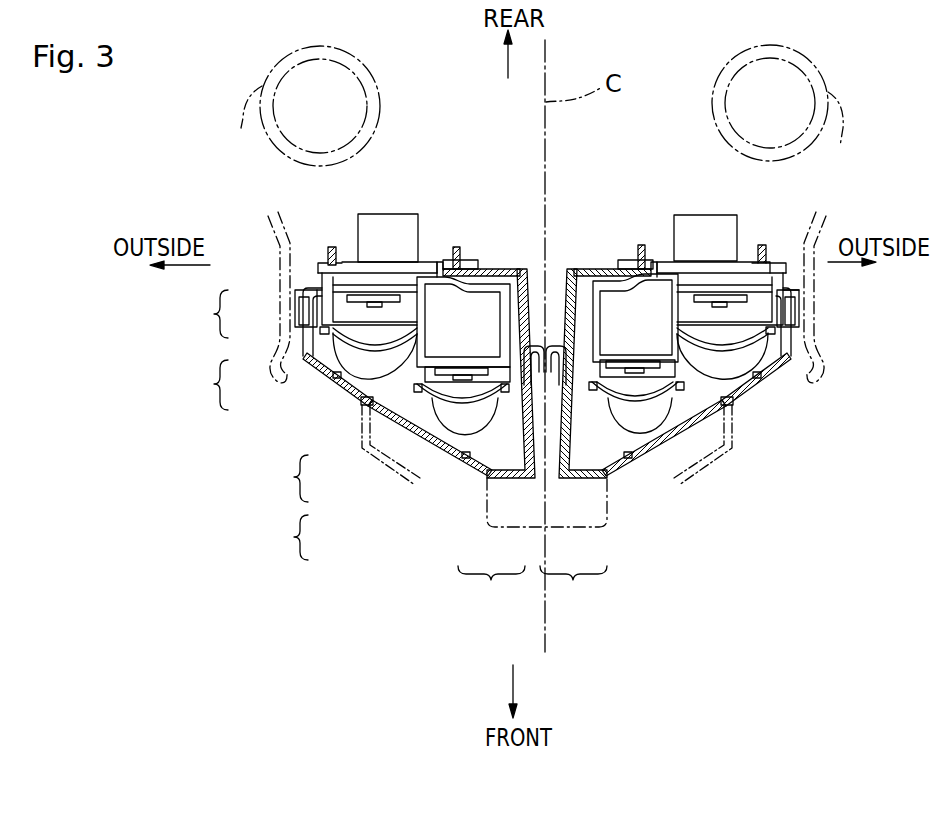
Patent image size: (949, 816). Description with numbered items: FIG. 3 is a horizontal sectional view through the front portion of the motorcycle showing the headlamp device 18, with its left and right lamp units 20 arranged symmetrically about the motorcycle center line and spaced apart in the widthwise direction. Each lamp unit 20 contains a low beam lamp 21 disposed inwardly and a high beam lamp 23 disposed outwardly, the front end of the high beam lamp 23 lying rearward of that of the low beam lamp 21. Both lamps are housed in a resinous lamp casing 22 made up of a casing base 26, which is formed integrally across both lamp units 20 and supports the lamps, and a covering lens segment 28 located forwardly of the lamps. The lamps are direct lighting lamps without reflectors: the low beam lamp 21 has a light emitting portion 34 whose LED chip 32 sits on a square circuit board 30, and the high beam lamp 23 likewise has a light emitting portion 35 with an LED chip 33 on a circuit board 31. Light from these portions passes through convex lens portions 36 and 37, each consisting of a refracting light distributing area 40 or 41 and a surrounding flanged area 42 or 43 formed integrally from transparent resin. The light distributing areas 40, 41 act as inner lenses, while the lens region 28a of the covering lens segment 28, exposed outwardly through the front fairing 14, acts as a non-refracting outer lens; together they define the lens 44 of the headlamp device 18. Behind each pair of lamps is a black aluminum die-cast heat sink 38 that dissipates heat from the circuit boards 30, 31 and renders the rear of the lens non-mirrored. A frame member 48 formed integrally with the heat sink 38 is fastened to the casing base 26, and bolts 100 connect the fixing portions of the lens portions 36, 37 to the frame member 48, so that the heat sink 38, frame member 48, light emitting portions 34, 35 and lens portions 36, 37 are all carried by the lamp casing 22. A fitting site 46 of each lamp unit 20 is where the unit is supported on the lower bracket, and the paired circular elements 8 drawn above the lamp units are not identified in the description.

The front fork tube 8 is at (539, 109).
The front fairing 14 is at (270, 240).
The headlamp device 18 is at (541, 215).
The lamp unit 20 is at (491, 270).
The low beam lamp 21 is at (458, 437).
The lamp casing 22 is at (532, 587).
The high beam lamp 23 is at (333, 388).
The casing base 26 is at (482, 480).
The covering lens segment 28 is at (500, 478).
The lens region 28a is at (337, 388).
The circuit board 30 is at (367, 447).
The circuit board 31 is at (330, 297).
The LED chip 32 is at (415, 394).
The LED chip 33 is at (330, 315).
The light emitting portion 34 is at (290, 478).
The light emitting portion 35 is at (205, 314).
The lens portion 36 is at (290, 537).
The lens portion 37 is at (205, 385).
The heat sink 38 is at (418, 226).
The light distributing area 40 is at (458, 410).
The light distributing area 41 is at (343, 367).
The flanged area 42 is at (440, 398).
The flanged area 43 is at (352, 350).
The lens 44 is at (675, 450).
The fitting site 46 is at (333, 247).
The frame member 48 is at (500, 288).
The bolt 100 is at (300, 342).